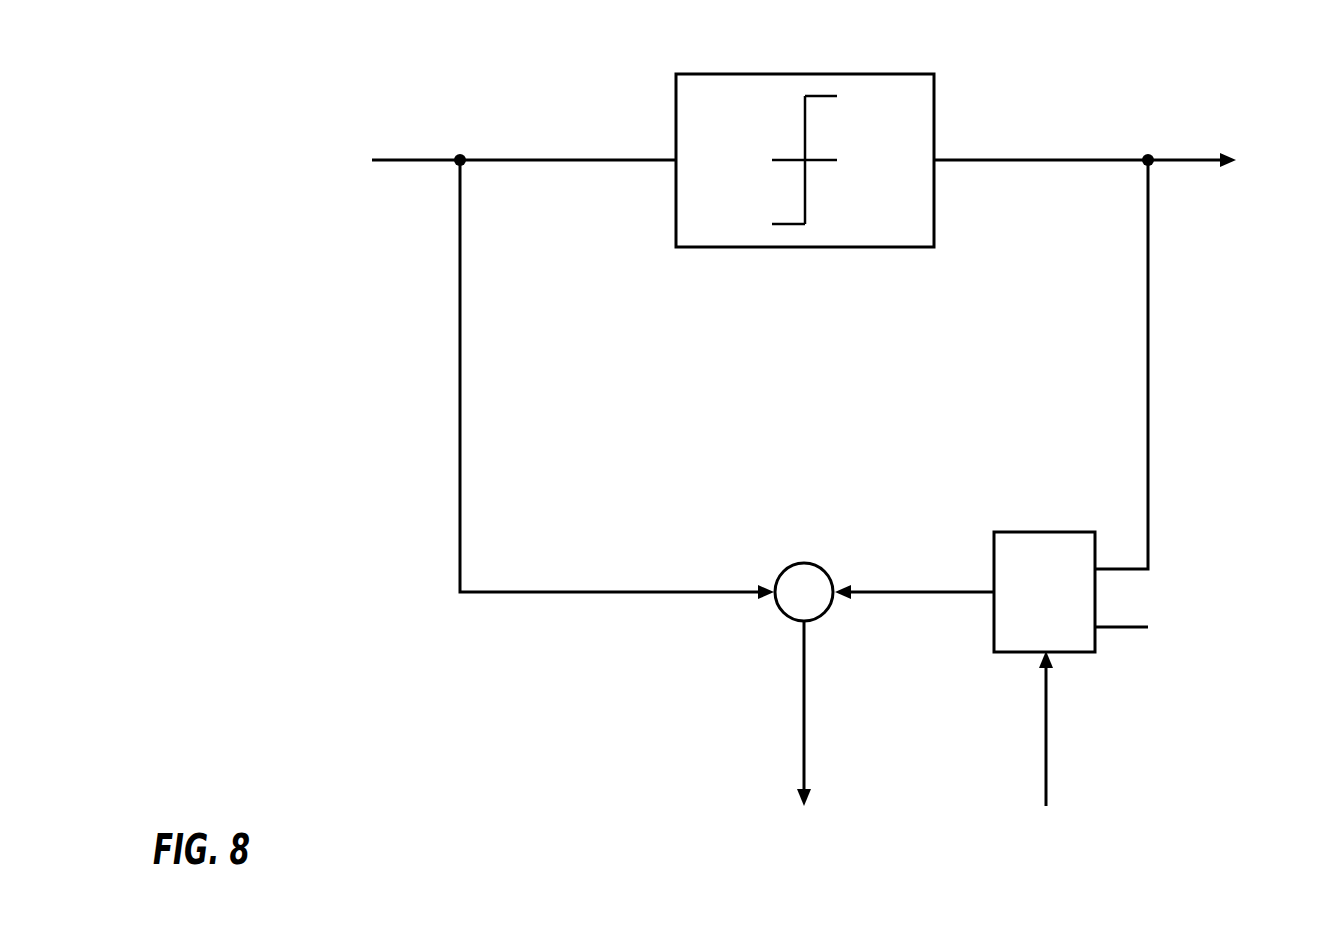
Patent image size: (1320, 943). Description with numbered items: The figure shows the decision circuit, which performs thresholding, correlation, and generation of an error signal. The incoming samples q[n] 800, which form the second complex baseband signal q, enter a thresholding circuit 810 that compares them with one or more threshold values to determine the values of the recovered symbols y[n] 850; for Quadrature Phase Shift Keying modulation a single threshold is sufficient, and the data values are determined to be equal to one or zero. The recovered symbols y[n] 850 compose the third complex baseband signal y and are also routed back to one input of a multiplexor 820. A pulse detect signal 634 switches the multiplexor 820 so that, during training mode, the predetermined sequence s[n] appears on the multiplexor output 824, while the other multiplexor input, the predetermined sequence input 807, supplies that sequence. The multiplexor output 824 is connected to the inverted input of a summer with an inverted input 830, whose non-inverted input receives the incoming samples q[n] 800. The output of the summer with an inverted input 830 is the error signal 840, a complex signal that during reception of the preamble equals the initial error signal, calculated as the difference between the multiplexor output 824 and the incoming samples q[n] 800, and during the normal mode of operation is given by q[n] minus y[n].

The incoming samples q[n] 800 is at (411, 159).
The thresholding circuit 810 is at (713, 72).
The recovered symbols y[n] 850 is at (1016, 157).
The multiplexor 820 is at (1038, 529).
The multiplexor output 824 is at (930, 594).
The summer with an inverted input 830 is at (801, 561).
The error signal 840 is at (802, 679).
The signal s0[n] input 807 is at (1130, 630).
The pulse detect signal 634 is at (1049, 744).